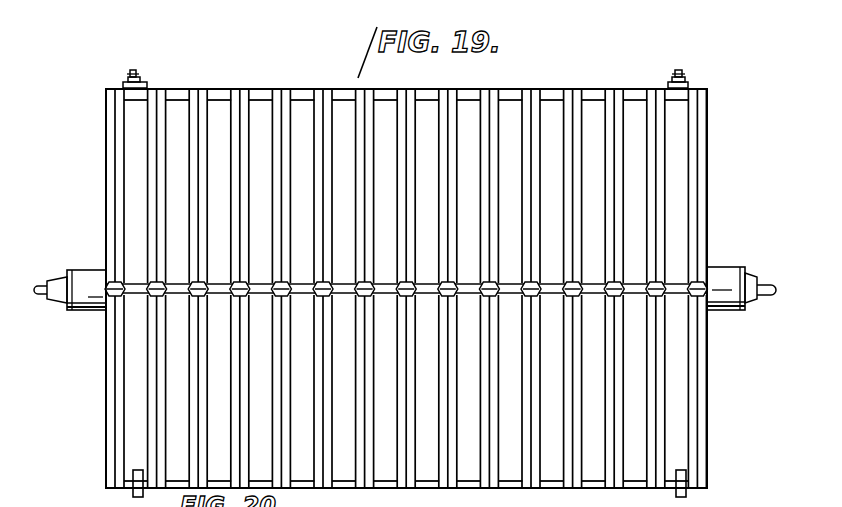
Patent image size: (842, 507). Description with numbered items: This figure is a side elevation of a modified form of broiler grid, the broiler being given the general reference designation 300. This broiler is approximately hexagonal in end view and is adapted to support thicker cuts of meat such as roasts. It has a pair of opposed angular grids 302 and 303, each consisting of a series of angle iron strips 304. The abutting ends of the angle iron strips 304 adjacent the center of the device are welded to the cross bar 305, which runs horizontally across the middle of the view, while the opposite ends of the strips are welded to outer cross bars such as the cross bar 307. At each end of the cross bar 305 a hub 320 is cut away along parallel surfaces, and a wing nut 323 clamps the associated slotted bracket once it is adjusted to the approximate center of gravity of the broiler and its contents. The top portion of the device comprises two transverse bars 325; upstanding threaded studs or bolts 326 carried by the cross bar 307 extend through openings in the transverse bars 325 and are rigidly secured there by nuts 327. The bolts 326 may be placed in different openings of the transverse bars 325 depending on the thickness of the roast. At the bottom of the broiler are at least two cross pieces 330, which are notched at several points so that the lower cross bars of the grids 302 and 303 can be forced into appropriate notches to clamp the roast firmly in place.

The broiler 300 is at (712, 192).
The angular grid 302 is at (429, 480).
The angular grid 303 is at (712, 129).
The angle iron strips 304 is at (450, 115).
The cross bar 305 is at (138, 293).
The cross bar 307 is at (262, 87).
The hub 320 is at (78, 283).
The wing nut 323 is at (50, 303).
The transverse bars 325 is at (143, 80).
The threaded studs or bolts 326 is at (133, 70).
The nuts 327 is at (128, 80).
The cross pieces 330 is at (138, 471).